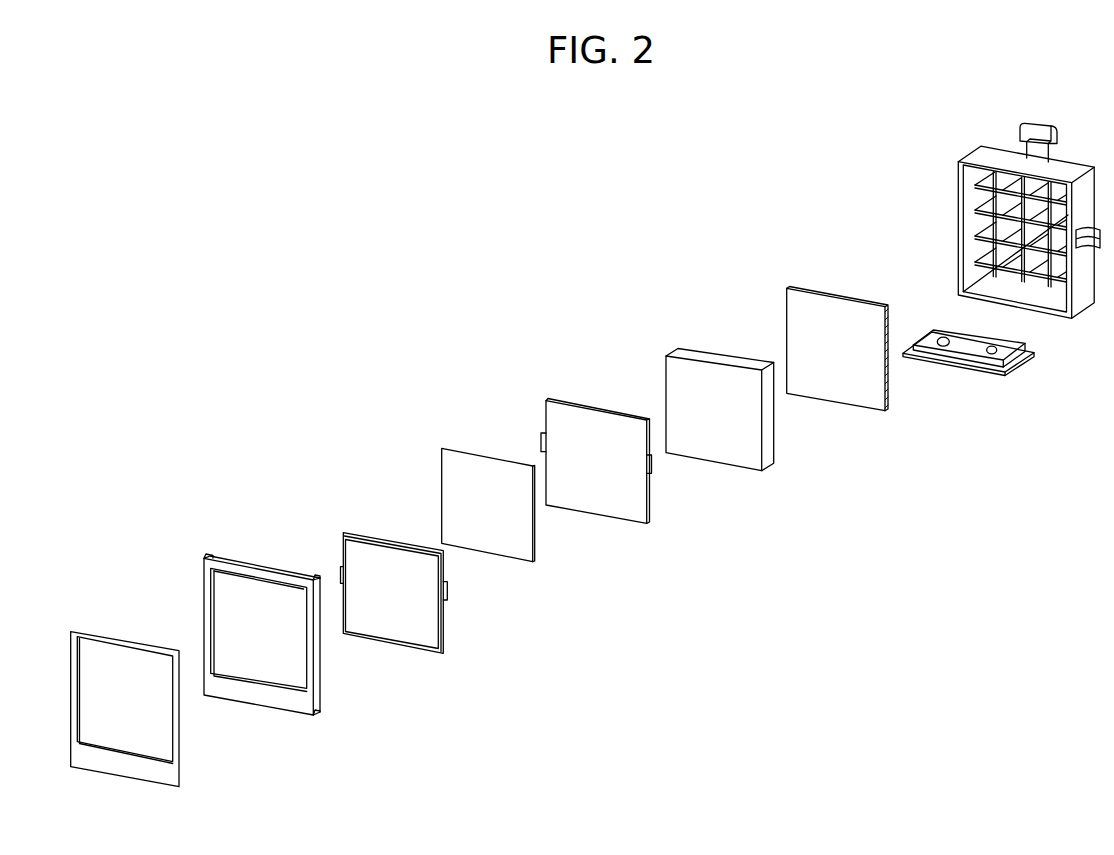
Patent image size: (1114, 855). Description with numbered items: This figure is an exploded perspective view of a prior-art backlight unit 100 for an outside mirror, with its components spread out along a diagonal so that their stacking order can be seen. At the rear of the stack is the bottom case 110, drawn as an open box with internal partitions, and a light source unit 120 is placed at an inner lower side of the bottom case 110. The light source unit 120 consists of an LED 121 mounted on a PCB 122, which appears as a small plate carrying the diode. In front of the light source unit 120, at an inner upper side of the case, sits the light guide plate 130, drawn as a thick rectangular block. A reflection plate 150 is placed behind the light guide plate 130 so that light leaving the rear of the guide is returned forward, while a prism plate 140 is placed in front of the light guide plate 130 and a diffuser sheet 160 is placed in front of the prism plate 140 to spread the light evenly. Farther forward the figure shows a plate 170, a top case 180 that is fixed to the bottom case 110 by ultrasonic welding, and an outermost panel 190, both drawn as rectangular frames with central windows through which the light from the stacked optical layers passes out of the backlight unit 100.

The backlight unit 100 is at (426, 242).
The bottom case 110 is at (947, 152).
The light source unit 120 is at (982, 292).
The LED 121 is at (969, 390).
The PCB 122 is at (1026, 357).
The light guide plate 130 is at (719, 345).
The prism plate 140 is at (597, 398).
The reflection plate 150 is at (843, 292).
The diffuser sheet 160 is at (485, 437).
The display panel 170 is at (387, 520).
The top case 180 is at (263, 557).
The cover panel 190 is at (115, 620).